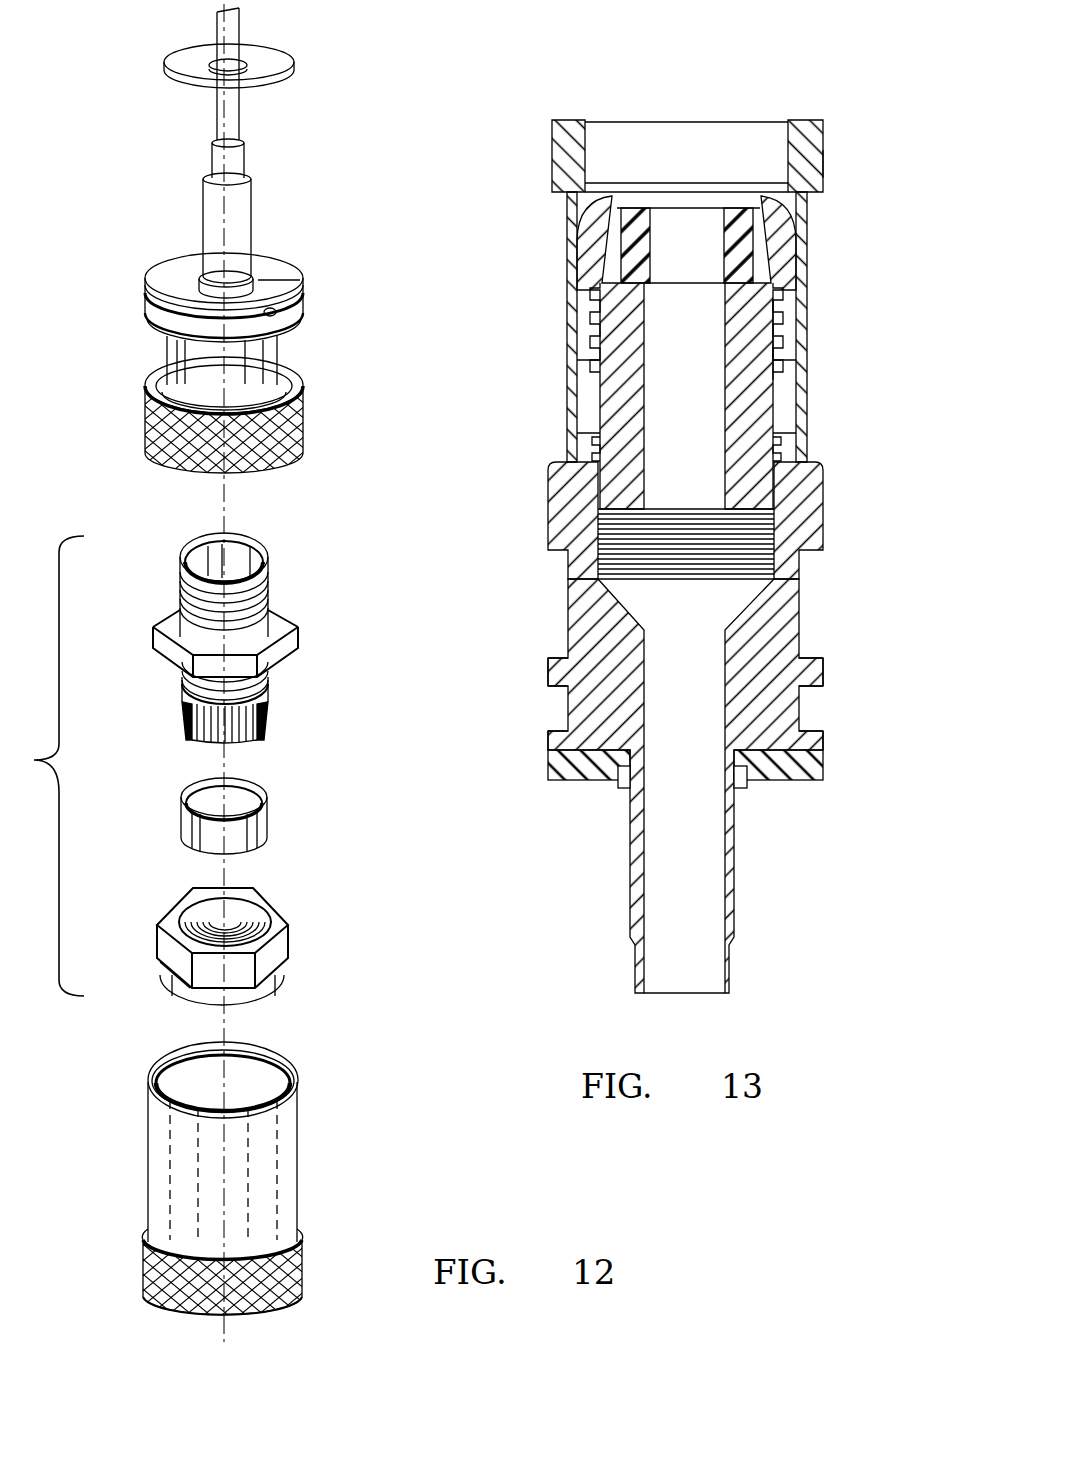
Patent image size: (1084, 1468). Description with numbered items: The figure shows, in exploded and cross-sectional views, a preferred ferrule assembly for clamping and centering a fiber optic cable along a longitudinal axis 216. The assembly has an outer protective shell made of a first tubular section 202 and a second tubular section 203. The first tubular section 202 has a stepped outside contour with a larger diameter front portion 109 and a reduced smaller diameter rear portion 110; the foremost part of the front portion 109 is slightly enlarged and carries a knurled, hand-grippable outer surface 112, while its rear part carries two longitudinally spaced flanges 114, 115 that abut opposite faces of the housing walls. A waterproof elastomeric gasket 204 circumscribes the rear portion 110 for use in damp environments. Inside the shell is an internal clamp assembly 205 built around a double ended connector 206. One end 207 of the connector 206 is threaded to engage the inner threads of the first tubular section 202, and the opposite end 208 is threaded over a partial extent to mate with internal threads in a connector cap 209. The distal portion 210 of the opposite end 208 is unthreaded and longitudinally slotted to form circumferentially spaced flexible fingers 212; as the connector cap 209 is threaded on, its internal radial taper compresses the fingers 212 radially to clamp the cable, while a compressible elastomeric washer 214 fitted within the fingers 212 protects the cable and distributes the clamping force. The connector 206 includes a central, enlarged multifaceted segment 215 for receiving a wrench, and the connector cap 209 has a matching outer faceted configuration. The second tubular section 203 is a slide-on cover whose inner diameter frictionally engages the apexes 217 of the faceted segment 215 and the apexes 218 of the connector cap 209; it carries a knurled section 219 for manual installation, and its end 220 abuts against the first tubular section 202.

In FIG. 12, the front portion 109 is at (168, 357).
In FIG. 12, the rear portion 110 is at (251, 217).
In FIG. 12, the knurled hand-grippable outer surface 112 is at (150, 398).
In FIG. 13, the knurled hand-grippable outer surface 112 is at (548, 539).
In FIG. 12, the flange 114 is at (296, 328).
In FIG. 13, the flange 114 is at (821, 680).
In FIG. 12, the flange 115 is at (305, 298).
In FIG. 13, the flange 115 is at (821, 742).
In FIG. 12, the first tubular section 202 is at (304, 415).
In FIG. 13, the first tubular section 202 is at (568, 594).
In FIG. 12, the second tubular section 203 is at (297, 1162).
In FIG. 13, the second tubular section 203 is at (568, 268).
In FIG. 12, the waterproof elastomeric gasket 204 is at (294, 63).
In FIG. 13, the waterproof elastomeric gasket 204 is at (548, 772).
In FIG. 12, the internal clamp assembly 205 is at (42, 766).
In FIG. 12, the double ended connector 206 is at (263, 668).
In FIG. 13, the double ended connector 206 is at (723, 353).
In FIG. 12, the end 207 is at (267, 556).
In FIG. 12, the opposite end 208 is at (180, 682).
In FIG. 12, the connector cap 209 is at (290, 945).
In FIG. 13, the connector cap 209 is at (789, 183).
In FIG. 12, the distal portion 210 is at (193, 738).
In FIG. 12, the flexible fingers 212 is at (250, 738).
In FIG. 12, the compressible elastomeric washer 214 is at (267, 827).
In FIG. 13, the compressible elastomeric washer 214 is at (722, 247).
In FIG. 12, the multifaceted segment 215 is at (175, 617).
In FIG. 13, the multifaceted segment 215 is at (787, 397).
In FIG. 12, the longitudinal axis 216 is at (223, 1328).
In FIG. 12, the apexes 217 is at (300, 652).
In FIG. 12, the apexes 218 is at (195, 967).
In FIG. 12, the knurled section 219 is at (150, 1282).
In FIG. 13, the knurled section 219 is at (823, 163).
In FIG. 12, the end 220 is at (293, 1078).